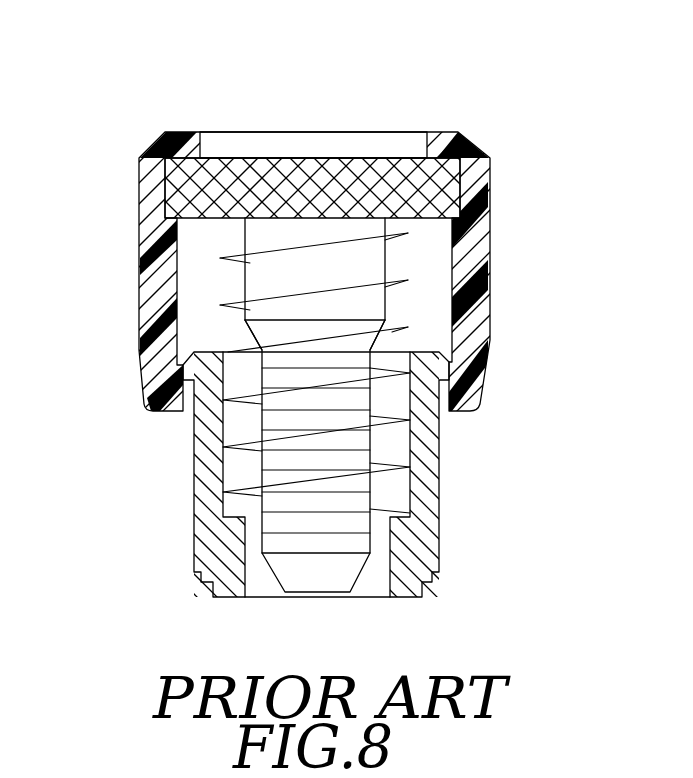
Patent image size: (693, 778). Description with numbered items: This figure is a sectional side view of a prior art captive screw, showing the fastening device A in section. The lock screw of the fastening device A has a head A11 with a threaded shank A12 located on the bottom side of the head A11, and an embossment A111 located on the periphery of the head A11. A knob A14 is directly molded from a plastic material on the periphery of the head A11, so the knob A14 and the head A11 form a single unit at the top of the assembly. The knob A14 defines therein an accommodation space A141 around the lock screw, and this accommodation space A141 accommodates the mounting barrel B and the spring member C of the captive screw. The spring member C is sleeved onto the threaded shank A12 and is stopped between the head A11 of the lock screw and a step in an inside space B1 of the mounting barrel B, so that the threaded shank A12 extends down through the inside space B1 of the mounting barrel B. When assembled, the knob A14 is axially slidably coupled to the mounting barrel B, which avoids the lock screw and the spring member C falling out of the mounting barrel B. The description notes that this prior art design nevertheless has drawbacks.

The fastening device A is at (136, 114).
The head A11 is at (390, 118).
The embossment A111 is at (147, 153).
The knob A14 is at (505, 197).
The accommodation space A141 is at (438, 281).
The threaded shank A12 is at (282, 282).
The spring member C is at (385, 325).
The mounting barrel B is at (175, 521).
The inside space B1 is at (400, 448).